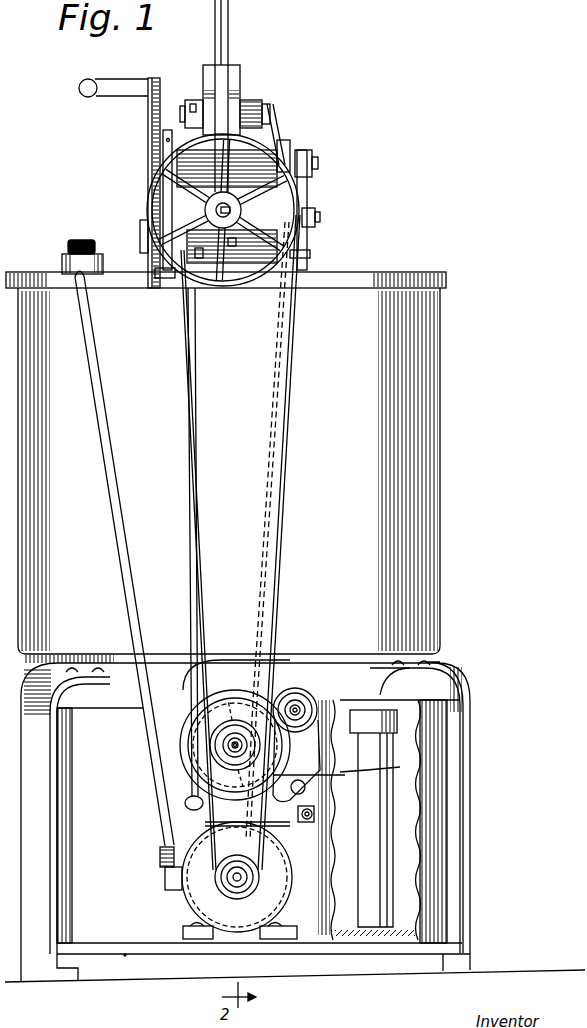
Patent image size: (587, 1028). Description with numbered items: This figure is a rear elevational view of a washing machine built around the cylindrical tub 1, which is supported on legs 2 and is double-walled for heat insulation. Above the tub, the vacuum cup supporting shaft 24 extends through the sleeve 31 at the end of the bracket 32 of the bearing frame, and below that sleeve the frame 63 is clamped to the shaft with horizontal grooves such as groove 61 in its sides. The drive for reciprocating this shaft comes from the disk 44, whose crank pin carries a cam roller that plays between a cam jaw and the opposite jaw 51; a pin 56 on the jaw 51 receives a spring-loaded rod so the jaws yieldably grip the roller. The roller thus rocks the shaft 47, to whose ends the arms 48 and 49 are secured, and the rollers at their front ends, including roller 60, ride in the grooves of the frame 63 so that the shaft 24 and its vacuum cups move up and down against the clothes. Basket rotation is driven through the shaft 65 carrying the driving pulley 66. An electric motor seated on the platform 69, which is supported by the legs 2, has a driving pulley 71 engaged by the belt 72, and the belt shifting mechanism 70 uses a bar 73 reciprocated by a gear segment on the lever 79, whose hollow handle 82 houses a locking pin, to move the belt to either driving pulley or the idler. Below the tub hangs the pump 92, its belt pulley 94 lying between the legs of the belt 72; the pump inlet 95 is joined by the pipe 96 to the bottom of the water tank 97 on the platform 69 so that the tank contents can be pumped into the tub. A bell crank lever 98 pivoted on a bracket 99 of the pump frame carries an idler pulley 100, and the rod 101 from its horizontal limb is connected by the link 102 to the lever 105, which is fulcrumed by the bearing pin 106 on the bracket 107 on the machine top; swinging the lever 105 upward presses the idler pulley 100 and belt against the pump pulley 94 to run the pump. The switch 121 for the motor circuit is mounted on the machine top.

The cylindrical tub 1 is at (440, 496).
The legs 2 is at (463, 700).
The vacuum cup supporting shaft 24 is at (229, 42).
The sleeve 31 is at (240, 78).
The bracket 32 is at (250, 105).
The disk 44 is at (273, 222).
The shaft 47 is at (318, 160).
The arm 48 is at (168, 140).
The arm 49 is at (230, 207).
The jaw 51 is at (300, 258).
The pin 56 is at (320, 218).
The roller 60 is at (270, 110).
The horizontal groove 61 is at (186, 108).
The frame 63 is at (196, 100).
The shaft 65 is at (280, 135).
The driving pulley 66 is at (300, 200).
The platform 69 is at (125, 948).
The belt shifting mechanism 70 is at (193, 903).
The driving pulley 71 is at (237, 864).
The belt 72 is at (290, 483).
The bar 73 is at (150, 280).
The lever 79 is at (148, 140).
The handle 82 is at (110, 90).
The pump 92 is at (240, 700).
The belt pulley 94 is at (213, 738).
The inlet 95 is at (377, 690).
The pipe 96 is at (387, 803).
The water tank 97 is at (476, 876).
The bell crank lever 98 is at (304, 750).
The bracket 99 is at (378, 771).
The idler pulley 100 is at (303, 690).
The rod 101 is at (196, 447).
The link 102 is at (180, 200).
The lever 105 is at (140, 232).
The bearing pin 106 is at (207, 220).
The bracket 107 is at (198, 258).
The switch 121 is at (62, 262).